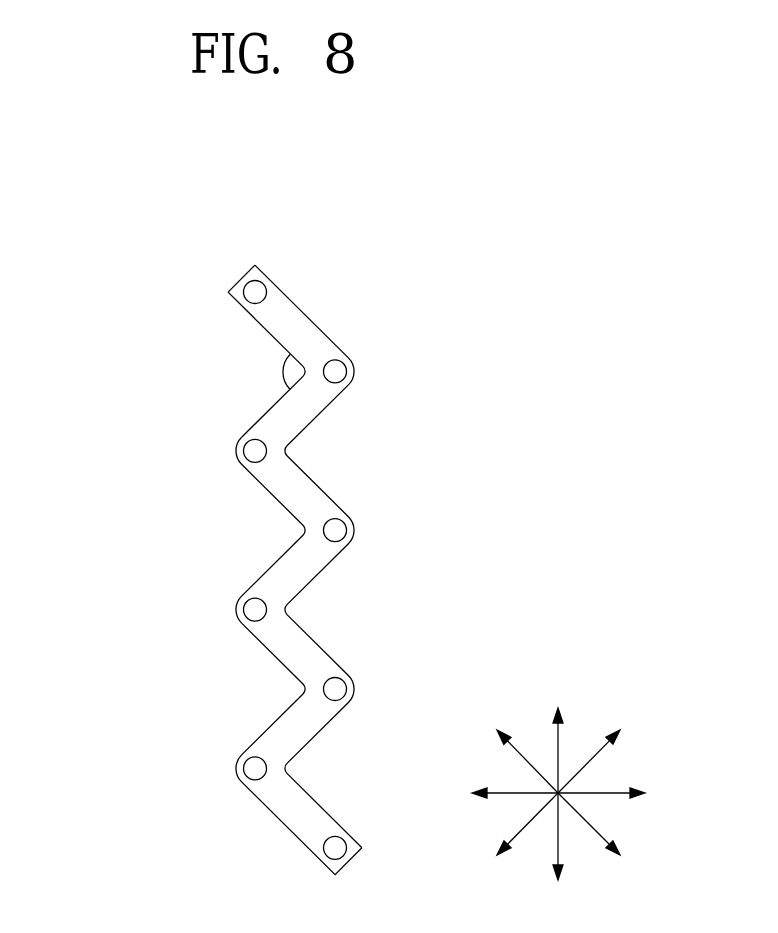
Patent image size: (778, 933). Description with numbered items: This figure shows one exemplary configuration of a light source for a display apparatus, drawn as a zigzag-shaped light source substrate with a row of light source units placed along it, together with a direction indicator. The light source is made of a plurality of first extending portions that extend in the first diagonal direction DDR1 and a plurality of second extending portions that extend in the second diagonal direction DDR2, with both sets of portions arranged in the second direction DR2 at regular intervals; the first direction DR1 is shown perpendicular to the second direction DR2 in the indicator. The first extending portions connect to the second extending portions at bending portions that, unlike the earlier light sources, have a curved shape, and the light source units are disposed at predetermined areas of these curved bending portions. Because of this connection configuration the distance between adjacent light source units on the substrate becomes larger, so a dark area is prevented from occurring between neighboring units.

The first direction DR1 is at (579, 792).
The second direction DR2 is at (558, 780).
The first diagonal direction DDR1 is at (586, 801).
The second diagonal direction DDR2 is at (586, 784).